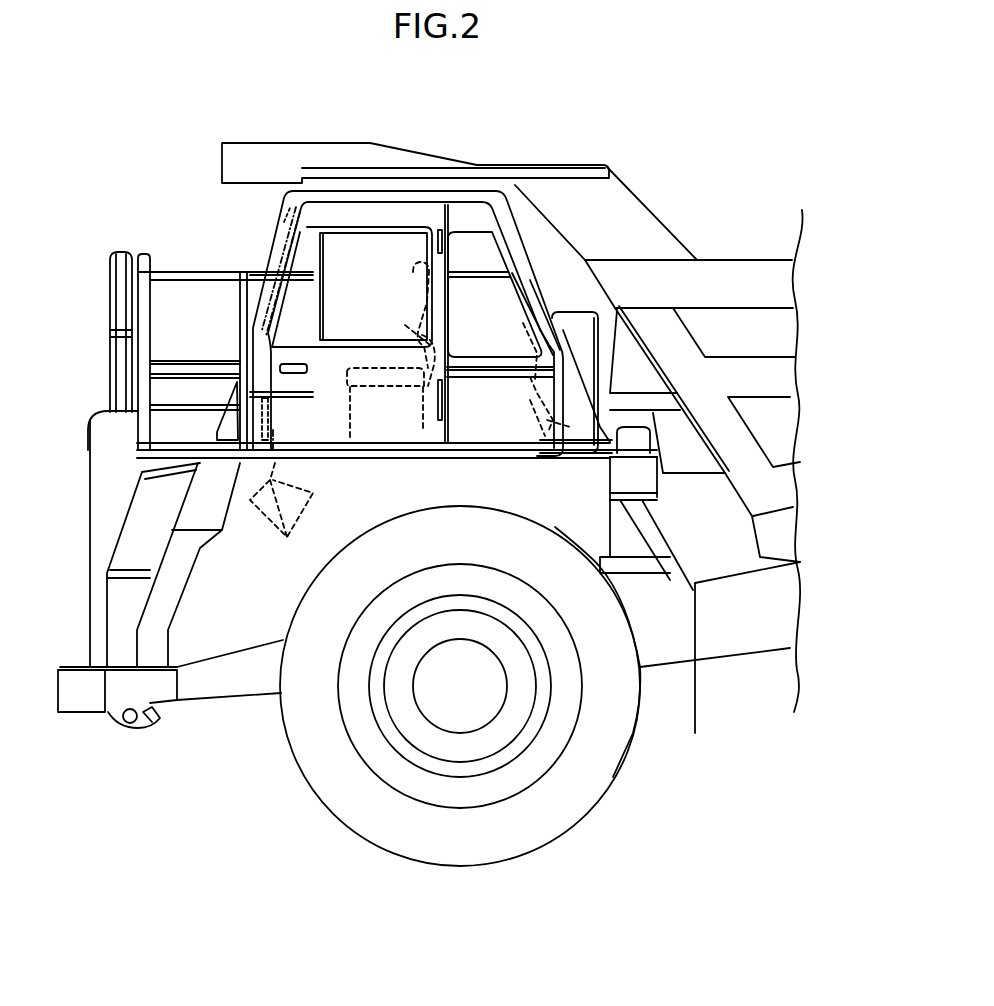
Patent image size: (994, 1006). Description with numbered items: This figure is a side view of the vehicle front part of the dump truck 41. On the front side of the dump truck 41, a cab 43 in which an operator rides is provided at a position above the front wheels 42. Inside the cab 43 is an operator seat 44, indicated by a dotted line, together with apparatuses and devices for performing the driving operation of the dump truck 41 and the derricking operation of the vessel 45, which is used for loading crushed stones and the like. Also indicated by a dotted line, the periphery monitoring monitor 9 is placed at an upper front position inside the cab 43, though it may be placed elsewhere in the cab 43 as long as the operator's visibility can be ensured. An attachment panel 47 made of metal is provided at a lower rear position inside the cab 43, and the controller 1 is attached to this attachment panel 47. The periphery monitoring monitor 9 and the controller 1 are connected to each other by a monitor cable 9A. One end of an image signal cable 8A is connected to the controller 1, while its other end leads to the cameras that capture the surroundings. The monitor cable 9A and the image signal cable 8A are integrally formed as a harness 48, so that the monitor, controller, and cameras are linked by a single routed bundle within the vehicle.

The controller 1 is at (527, 407).
The image signal cable 8A is at (287, 538).
The periphery monitoring monitor 9 is at (282, 228).
The monitor cable 9A is at (278, 410).
The dump truck 41 is at (640, 128).
The front wheels 42 is at (565, 820).
The cab 43 is at (473, 213).
The operator seat 44 is at (405, 325).
The vessel 45 is at (744, 266).
The attachment panel 47 is at (533, 338).
The harness 48 is at (384, 442).